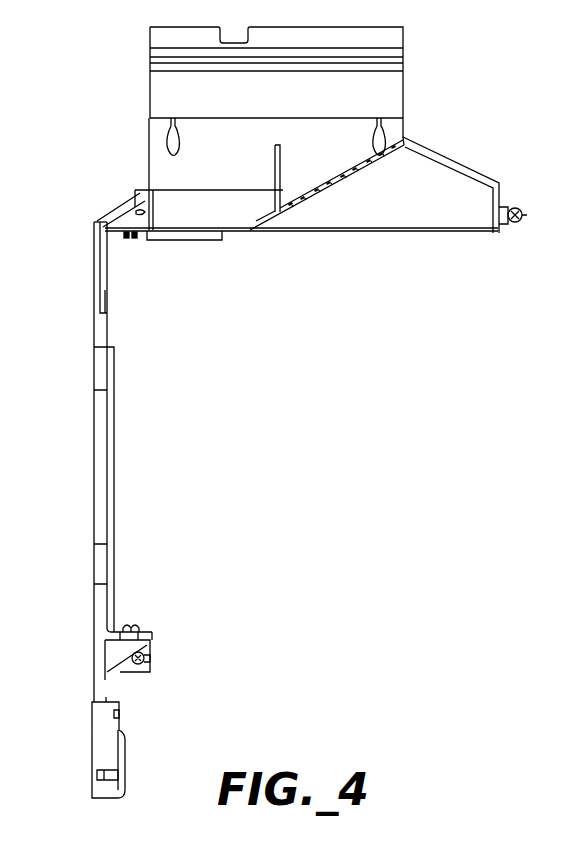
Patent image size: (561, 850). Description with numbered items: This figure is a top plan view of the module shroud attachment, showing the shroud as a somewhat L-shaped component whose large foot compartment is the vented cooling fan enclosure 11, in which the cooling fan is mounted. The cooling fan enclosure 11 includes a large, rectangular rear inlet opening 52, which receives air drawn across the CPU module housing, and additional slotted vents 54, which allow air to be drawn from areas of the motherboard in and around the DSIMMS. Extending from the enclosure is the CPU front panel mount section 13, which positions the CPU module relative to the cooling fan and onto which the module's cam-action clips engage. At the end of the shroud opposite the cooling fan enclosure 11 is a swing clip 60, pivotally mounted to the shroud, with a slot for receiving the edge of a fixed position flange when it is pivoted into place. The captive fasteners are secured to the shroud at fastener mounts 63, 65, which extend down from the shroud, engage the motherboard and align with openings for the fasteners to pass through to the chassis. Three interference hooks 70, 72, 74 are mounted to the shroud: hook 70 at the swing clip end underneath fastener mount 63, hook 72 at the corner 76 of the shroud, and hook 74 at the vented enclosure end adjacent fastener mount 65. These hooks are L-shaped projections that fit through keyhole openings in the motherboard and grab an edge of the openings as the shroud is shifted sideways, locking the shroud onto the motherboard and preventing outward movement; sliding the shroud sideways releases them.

The vented cooling fan enclosure 11 is at (405, 100).
The CPU front panel mount section 13 is at (98, 608).
The rear inlet opening 52 is at (190, 242).
The slotted vents 54 is at (345, 186).
The swing clip 60 is at (125, 775).
The fastener mount 63 is at (153, 634).
The fastener mount 65 is at (515, 228).
The interference hook 70 is at (158, 660).
The interference hook 72 is at (104, 220).
The interference hook 74 is at (515, 205).
The corner 76 is at (92, 223).